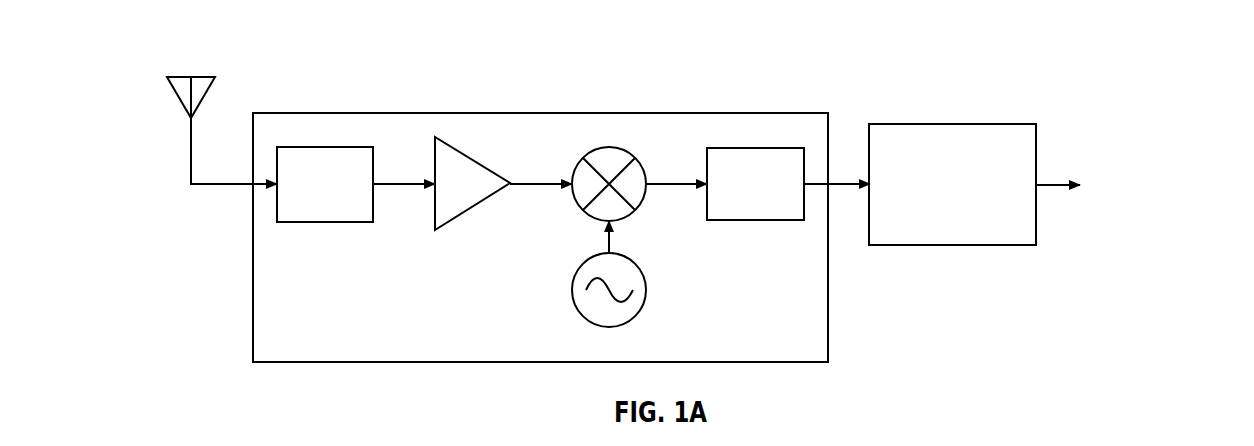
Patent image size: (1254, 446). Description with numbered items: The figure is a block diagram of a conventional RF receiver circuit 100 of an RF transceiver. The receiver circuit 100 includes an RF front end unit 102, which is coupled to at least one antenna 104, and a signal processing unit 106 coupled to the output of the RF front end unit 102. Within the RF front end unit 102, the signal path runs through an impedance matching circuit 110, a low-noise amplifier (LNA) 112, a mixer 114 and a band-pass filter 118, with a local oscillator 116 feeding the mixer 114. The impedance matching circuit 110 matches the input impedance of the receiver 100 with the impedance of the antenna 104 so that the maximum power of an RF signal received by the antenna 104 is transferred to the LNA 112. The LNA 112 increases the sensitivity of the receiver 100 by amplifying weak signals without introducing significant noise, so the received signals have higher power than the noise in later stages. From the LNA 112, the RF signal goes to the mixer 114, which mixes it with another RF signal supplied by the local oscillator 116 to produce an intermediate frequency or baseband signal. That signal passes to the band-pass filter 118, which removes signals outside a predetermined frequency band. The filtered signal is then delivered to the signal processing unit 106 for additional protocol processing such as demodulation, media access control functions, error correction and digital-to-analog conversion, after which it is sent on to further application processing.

The RF receiver circuit 100 is at (767, 50).
The RF front end unit 102 is at (293, 113).
The antenna 104 is at (182, 75).
The signal processing unit 106 is at (910, 124).
The impedance matching circuit 110 is at (331, 147).
The low-noise amplifier (LNA) 112 is at (473, 157).
The mixer 114 is at (624, 150).
The local oscillator 116 is at (624, 254).
The band-pass filter 118 is at (762, 148).